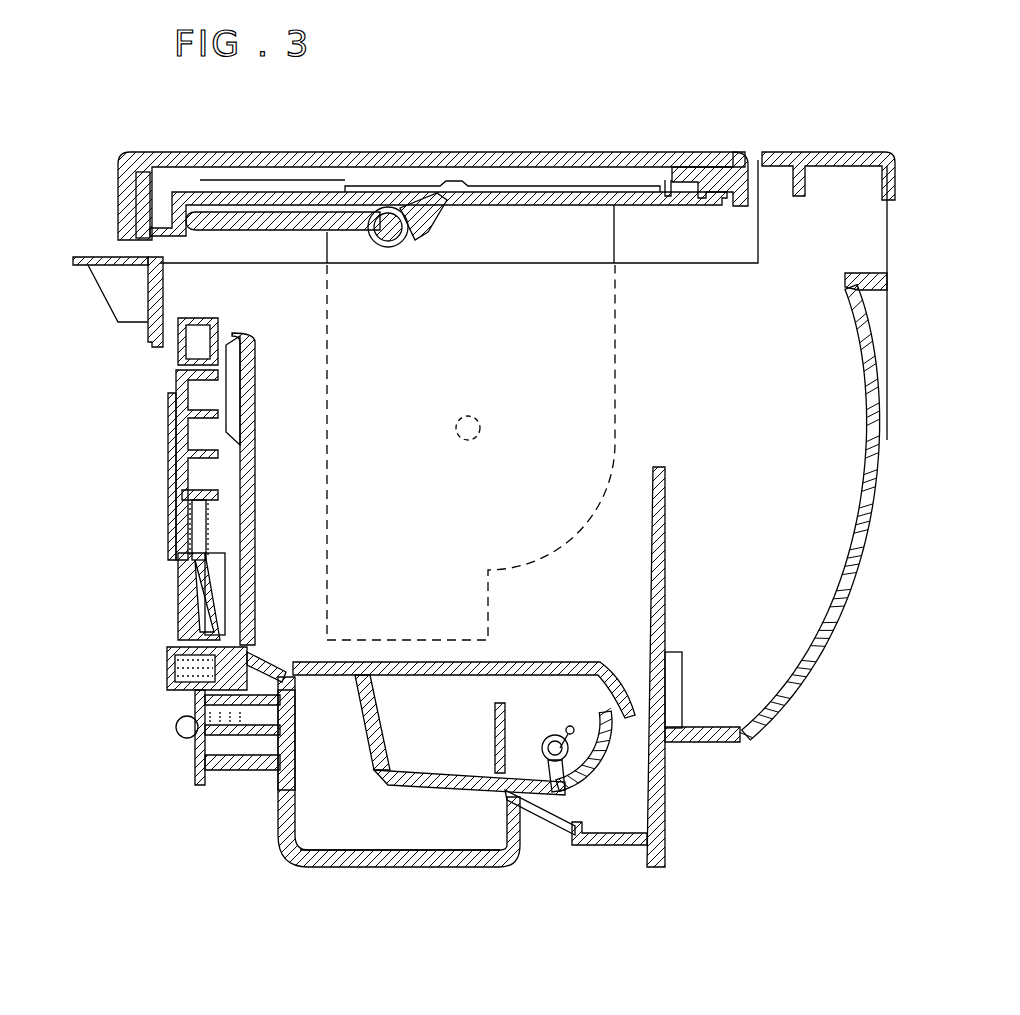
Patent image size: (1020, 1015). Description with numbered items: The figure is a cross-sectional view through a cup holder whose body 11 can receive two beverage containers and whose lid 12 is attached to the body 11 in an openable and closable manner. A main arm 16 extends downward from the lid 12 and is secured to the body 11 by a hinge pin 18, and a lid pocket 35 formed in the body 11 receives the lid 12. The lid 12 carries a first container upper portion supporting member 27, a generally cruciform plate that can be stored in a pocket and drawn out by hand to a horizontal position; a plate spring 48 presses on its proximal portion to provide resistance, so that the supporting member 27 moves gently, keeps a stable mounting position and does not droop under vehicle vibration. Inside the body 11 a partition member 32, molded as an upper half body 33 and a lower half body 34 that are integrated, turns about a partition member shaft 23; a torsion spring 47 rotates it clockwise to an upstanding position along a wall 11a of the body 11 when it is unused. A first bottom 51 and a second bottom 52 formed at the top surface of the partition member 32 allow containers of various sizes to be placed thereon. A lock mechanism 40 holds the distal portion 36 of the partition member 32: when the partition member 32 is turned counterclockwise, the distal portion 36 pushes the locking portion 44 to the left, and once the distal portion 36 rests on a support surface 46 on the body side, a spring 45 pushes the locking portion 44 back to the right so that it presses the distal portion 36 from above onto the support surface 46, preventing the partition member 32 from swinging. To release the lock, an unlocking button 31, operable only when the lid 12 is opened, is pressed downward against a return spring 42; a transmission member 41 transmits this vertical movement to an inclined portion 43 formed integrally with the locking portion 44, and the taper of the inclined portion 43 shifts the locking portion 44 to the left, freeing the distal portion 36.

The body 11 is at (748, 722).
The wall of the body 11a is at (655, 572).
The lid 12 is at (462, 150).
The main arm 16 is at (625, 400).
The hinge pin 18 is at (482, 430).
The partition member shaft 23 is at (556, 765).
The first container upper portion supporting member 27 is at (245, 235).
The unlocking button 31 is at (198, 318).
The partition member 32 is at (388, 795).
The upper half body 33 is at (430, 660).
The lower half body 34 is at (452, 790).
The lid pocket 35 is at (826, 640).
The distal portion 36 is at (186, 735).
The lock mechanism 40 is at (155, 628).
The transmission member 41 is at (176, 385).
The return spring 42 is at (190, 520).
The inclined portion 43 is at (180, 592).
The locking portion 44 is at (268, 660).
The spring 45 is at (192, 690).
The support surface 46 is at (303, 702).
The torsion spring 47 is at (585, 775).
The plate spring 48 is at (516, 188).
The first bottom 51 is at (330, 845).
The second bottom 52 is at (505, 665).